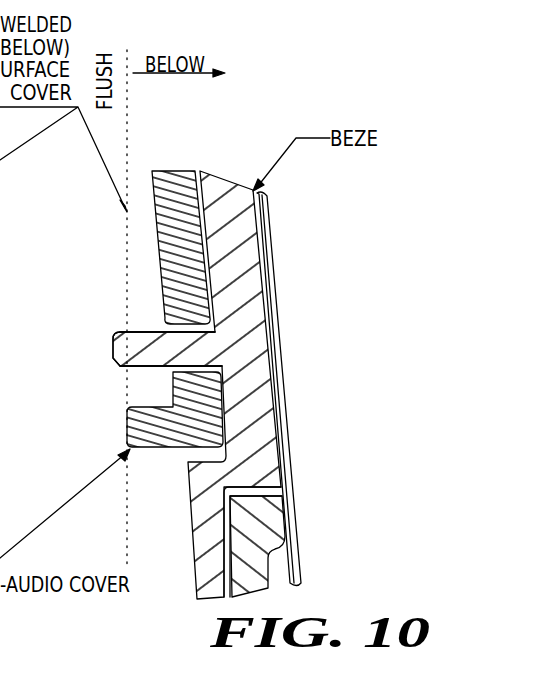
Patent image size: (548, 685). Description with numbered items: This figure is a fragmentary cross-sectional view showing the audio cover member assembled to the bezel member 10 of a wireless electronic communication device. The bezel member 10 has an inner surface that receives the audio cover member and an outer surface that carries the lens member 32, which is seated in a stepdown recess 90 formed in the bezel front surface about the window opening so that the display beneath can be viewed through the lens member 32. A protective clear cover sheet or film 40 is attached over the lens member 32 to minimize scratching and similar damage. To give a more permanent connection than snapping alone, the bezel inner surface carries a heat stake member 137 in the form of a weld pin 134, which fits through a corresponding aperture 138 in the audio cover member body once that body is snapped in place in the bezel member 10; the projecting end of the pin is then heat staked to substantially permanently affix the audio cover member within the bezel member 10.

The bezel member 10 is at (280, 367).
The lens member 32 is at (270, 597).
The protective clear cover sheet or film 40 is at (298, 531).
The stepdown recess 90 is at (282, 489).
The weld pin 134 is at (118, 367).
The heat stake member 137 is at (100, 337).
The aperture 138 is at (147, 328).